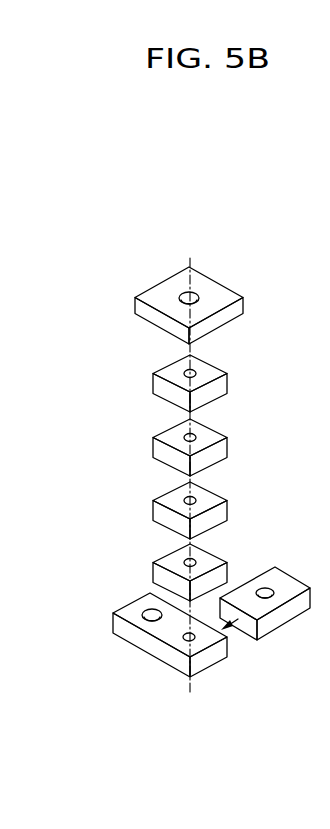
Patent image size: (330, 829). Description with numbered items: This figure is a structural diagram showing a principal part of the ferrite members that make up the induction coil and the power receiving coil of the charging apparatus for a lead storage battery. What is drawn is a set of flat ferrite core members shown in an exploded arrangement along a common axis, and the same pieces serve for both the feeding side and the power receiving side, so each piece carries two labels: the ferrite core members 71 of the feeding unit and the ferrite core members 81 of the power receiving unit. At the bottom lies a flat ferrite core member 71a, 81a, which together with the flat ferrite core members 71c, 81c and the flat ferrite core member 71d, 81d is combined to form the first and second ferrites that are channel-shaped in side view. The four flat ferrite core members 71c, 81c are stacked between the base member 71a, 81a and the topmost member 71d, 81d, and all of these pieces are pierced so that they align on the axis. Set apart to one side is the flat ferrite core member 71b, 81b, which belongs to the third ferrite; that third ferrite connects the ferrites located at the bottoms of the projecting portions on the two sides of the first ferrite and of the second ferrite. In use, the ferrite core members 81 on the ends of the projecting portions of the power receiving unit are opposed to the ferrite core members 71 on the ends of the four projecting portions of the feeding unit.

The ferrite core member 71 is at (172, 444).
The ferrite core member 81 is at (249, 247).
The flat ferrite core member 71a is at (122, 640).
The flat ferrite core member 81a is at (148, 642).
The flat ferrite core member 71b is at (274, 626).
The flat ferrite core member 81b is at (272, 625).
The flat ferrite core member 71c is at (239, 471).
The flat ferrite core member 81c is at (217, 577).
The flat ferrite core member 71d is at (231, 302).
The flat ferrite core member 81d is at (225, 303).